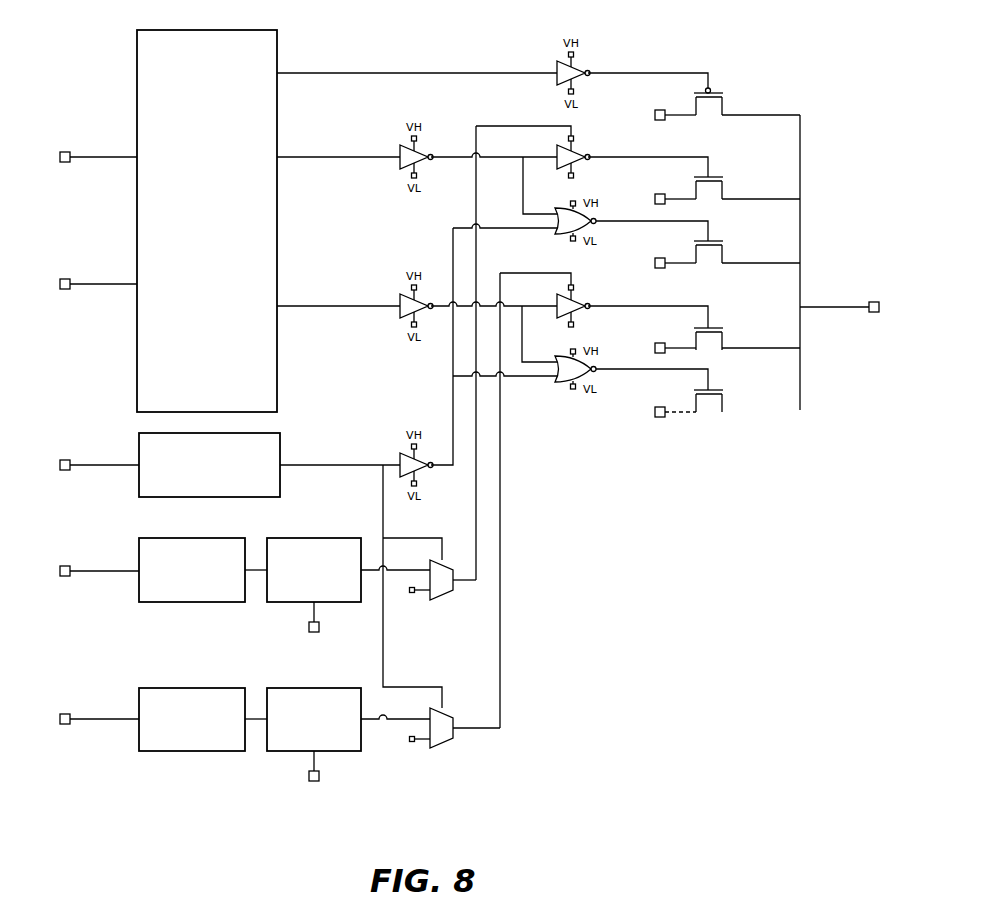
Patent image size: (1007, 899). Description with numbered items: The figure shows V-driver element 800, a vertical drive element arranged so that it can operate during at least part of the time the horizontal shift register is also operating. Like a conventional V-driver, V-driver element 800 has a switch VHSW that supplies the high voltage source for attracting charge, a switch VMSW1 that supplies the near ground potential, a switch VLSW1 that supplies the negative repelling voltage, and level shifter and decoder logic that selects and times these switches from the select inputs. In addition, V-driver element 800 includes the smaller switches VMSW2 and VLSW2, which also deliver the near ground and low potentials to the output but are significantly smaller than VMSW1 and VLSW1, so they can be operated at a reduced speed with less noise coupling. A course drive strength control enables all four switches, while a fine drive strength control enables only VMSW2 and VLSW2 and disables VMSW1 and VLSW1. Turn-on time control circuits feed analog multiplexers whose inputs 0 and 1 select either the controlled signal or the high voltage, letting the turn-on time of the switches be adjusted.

The V-driver element 800 is at (454, 415).
The high voltage switch VHSW is at (694, 96).
The first near-ground switch VMSW1 is at (694, 180).
The second near-ground switch VMSW2 is at (698, 244).
The first low voltage switch VLSW1 is at (694, 329).
The second low voltage switch VLSW2 is at (685, 393).
The analog MUX input 0 is at (401, 645).
The analog MUX input 1 is at (426, 667).